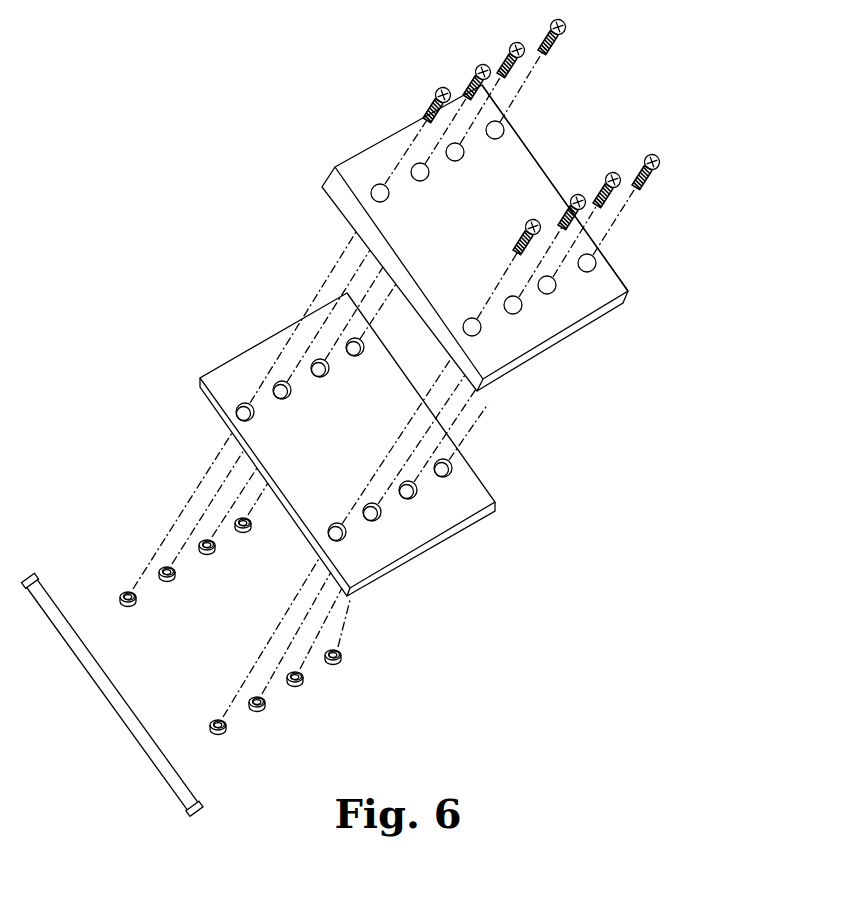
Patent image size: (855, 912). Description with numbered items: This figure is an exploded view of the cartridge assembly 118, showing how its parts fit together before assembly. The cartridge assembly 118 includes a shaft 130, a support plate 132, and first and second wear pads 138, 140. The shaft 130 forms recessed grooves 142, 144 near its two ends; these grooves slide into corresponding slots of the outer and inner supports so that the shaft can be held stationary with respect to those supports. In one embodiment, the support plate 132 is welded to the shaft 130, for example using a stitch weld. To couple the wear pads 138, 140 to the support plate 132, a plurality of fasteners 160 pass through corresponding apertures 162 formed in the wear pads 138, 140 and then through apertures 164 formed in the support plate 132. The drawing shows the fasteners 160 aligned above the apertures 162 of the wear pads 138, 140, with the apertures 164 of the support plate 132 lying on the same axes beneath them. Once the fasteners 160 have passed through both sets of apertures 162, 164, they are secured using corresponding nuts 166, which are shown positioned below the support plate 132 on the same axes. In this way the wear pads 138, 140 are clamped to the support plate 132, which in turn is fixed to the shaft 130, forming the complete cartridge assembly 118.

The cartridge assembly 118 is at (168, 196).
The shaft 130 is at (111, 661).
The support plate 132 is at (272, 337).
The first wear pad 138 is at (378, 221).
The second wear pad 140 is at (548, 183).
The recessed groove 142 is at (44, 576).
The recessed groove 144 is at (185, 812).
The fasteners 160 is at (590, 17).
The apertures 162 is at (386, 200).
The apertures 164 is at (252, 418).
The nuts 166 is at (118, 622).